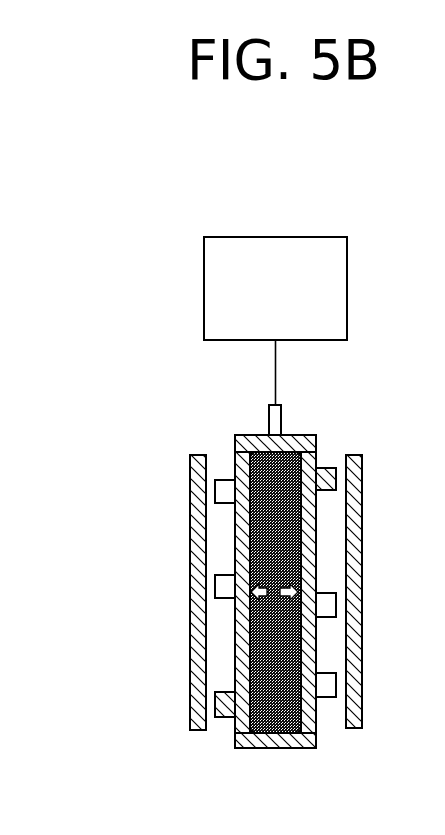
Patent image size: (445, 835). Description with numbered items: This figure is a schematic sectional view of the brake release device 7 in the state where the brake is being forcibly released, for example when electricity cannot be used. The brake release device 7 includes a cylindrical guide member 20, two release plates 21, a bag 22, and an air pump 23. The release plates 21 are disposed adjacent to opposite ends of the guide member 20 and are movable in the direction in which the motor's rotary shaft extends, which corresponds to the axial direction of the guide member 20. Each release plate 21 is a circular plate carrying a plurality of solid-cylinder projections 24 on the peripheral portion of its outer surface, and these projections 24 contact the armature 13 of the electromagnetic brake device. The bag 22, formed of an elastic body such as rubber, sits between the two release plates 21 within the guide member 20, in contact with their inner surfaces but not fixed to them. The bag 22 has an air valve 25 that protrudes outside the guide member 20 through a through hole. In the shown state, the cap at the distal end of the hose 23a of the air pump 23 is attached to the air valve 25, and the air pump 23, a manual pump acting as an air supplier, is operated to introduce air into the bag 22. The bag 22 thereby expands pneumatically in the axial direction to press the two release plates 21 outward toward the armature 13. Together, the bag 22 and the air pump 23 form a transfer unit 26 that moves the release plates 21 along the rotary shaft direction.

The brake release device 7 is at (190, 212).
The air pump 23 is at (348, 281).
The transfer unit 26 is at (198, 292).
The hose 23a is at (274, 372).
The air valve 25 is at (272, 419).
The guide member 20 is at (276, 589).
The release plate 21 is at (247, 536).
The bag 22 is at (277, 708).
The projection 24 is at (226, 491).
The armature 13 is at (201, 597).